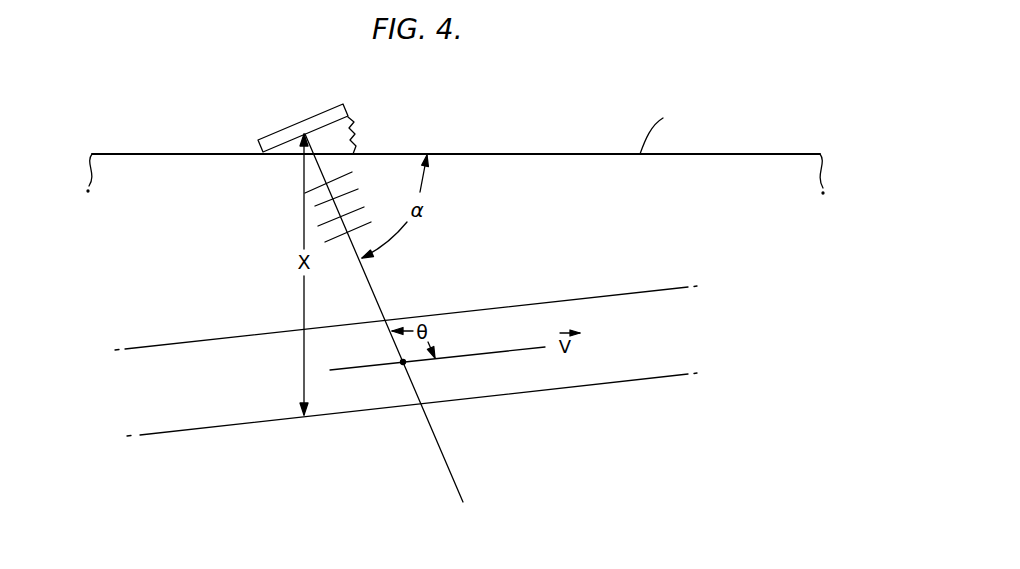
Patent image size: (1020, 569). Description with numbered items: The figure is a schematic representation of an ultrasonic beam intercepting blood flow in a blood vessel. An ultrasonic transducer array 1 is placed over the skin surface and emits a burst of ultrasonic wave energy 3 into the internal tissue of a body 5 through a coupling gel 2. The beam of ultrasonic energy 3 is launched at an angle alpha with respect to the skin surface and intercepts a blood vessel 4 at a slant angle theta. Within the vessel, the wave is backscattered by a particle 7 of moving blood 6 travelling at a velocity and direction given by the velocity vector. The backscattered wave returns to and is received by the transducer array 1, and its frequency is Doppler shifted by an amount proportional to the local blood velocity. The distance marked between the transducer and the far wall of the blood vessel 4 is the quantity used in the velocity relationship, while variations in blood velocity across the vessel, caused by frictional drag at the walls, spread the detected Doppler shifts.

The ultrasonic transducer array 1 is at (287, 131).
The coupling gel 2 is at (352, 129).
The ultrasonic wave energy 3 is at (317, 207).
The blood vessel 4 is at (250, 335).
The body 5 is at (505, 170).
The moving blood 6 is at (227, 397).
The particle 7 is at (402, 364).